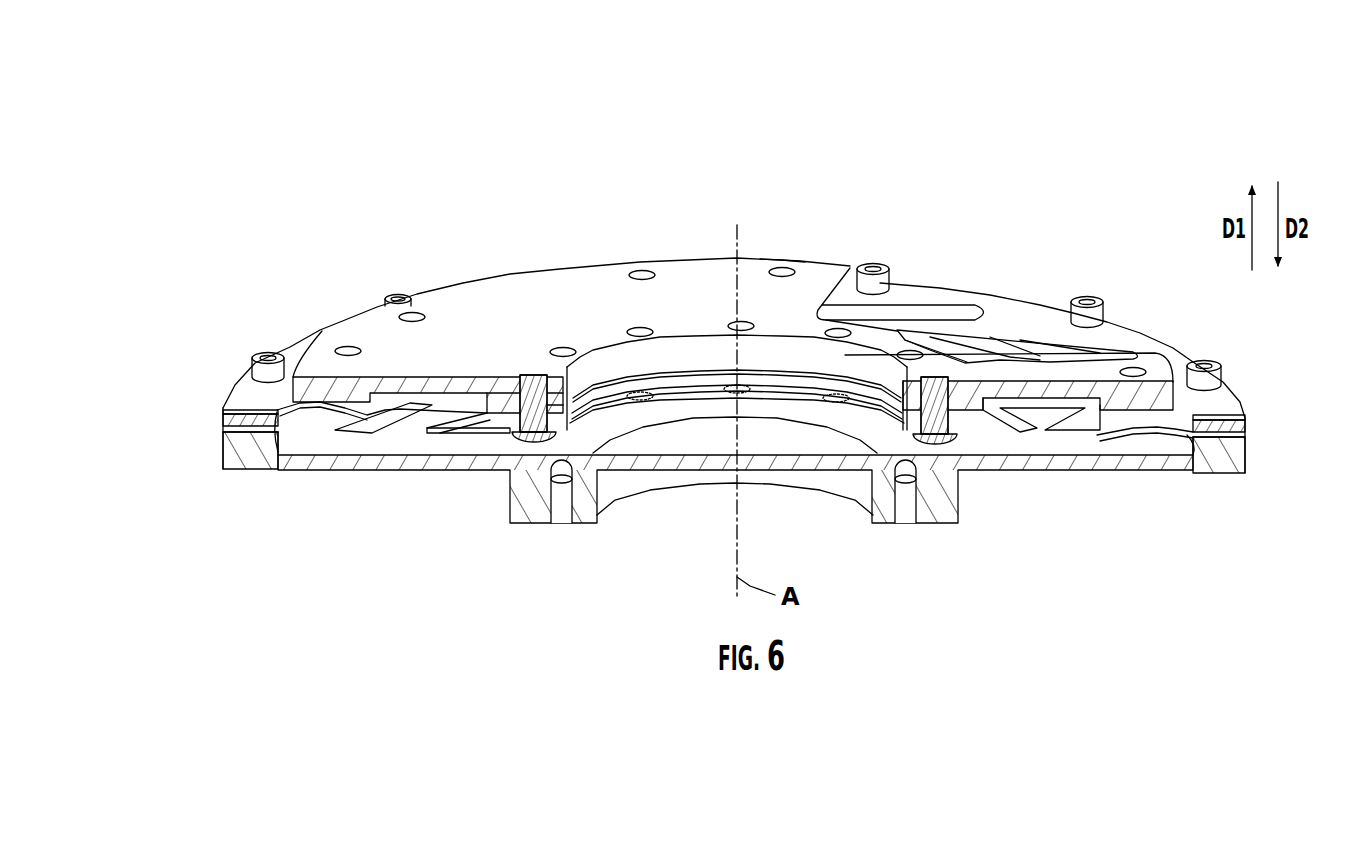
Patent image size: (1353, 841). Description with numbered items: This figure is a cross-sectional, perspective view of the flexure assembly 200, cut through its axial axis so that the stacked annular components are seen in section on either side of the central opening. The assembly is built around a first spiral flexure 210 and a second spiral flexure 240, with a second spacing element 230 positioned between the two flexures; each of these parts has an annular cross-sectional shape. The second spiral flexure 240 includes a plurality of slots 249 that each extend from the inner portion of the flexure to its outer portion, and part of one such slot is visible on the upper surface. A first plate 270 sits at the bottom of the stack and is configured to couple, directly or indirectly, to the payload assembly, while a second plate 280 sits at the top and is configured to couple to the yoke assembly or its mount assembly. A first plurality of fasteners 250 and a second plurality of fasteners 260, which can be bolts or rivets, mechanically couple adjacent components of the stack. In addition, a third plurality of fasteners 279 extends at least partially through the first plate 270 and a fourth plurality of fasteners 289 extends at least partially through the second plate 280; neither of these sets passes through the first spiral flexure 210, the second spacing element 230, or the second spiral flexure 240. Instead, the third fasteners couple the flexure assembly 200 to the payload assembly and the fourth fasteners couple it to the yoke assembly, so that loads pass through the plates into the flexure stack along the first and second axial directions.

The flexure assembly 200 is at (472, 170).
The first spiral flexure 210 is at (222, 447).
The second spacing element 230 is at (222, 421).
The second spiral flexure 240 is at (227, 398).
The slots 249 is at (931, 303).
The first plurality of fasteners 250 is at (518, 385).
The second plurality of fasteners 260 is at (266, 347).
The first plate 270 is at (399, 470).
The third plurality of fasteners 279 is at (561, 515).
The second plate 280 is at (563, 290).
The fourth plurality of fasteners 289 is at (783, 256).